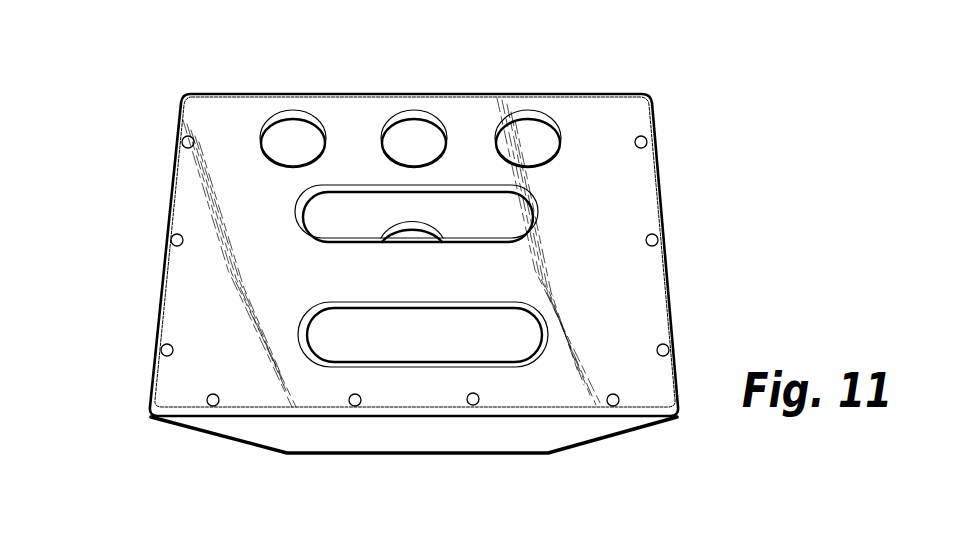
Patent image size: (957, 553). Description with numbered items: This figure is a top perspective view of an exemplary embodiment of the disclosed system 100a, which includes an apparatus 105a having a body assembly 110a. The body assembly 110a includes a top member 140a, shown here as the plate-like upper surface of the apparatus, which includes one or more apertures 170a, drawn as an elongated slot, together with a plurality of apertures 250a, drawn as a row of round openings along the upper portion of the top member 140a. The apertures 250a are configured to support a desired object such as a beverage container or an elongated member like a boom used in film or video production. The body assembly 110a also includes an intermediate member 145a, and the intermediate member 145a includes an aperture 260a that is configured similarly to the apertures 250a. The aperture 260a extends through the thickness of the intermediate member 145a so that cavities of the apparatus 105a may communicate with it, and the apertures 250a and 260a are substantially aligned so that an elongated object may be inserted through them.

The system 100a is at (128, 65).
The apparatus 105a is at (133, 136).
The body assembly 110a is at (668, 165).
The top member 140a is at (598, 128).
The intermediate member 145a is at (475, 207).
The aperture 170a is at (529, 330).
The apertures 250a is at (415, 135).
The aperture 260a is at (400, 227).